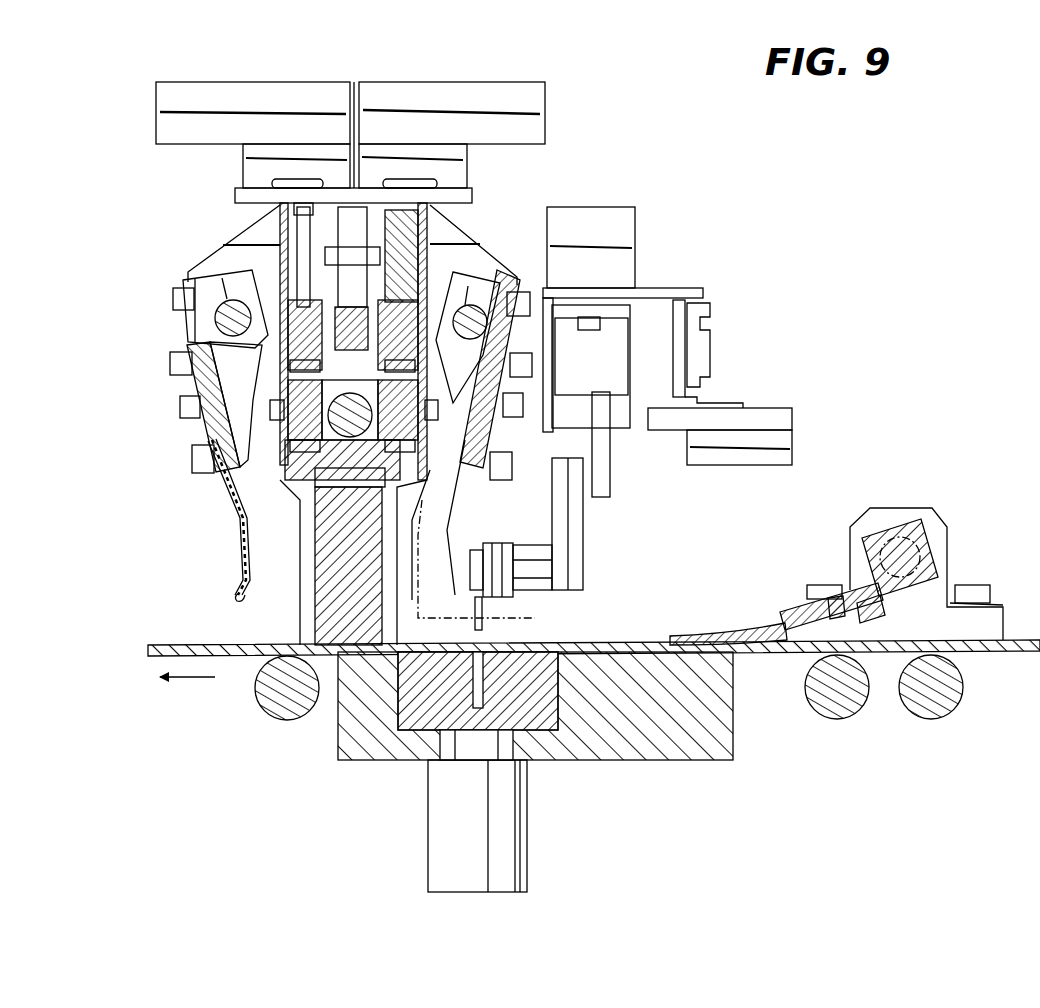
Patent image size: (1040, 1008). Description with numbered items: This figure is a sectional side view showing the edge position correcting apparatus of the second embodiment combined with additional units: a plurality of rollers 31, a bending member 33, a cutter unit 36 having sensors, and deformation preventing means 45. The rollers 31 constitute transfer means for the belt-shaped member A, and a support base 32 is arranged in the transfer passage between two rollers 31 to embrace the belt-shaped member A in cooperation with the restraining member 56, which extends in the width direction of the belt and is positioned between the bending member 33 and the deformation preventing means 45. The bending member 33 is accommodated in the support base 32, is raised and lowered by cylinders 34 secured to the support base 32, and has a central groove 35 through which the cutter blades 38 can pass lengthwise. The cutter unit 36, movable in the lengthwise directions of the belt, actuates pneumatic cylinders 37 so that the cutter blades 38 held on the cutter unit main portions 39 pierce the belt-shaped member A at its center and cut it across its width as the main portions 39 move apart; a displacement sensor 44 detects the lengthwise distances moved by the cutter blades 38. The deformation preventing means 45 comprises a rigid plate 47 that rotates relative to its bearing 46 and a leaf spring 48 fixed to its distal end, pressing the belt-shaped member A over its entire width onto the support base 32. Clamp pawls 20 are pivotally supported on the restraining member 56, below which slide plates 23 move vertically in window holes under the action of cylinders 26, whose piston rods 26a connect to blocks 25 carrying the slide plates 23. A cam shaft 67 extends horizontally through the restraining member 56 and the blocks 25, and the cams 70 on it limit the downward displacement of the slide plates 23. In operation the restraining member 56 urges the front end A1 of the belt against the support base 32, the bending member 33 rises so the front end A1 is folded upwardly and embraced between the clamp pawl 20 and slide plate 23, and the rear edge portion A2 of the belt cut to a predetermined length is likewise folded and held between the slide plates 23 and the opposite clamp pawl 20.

The cylinder 26 is at (405, 226).
The piston rod 26a is at (282, 282).
The block 25 is at (282, 340).
The cam shaft 67 is at (270, 382).
The clamp pawl 20 is at (212, 420).
The cam 70 is at (283, 438).
The slide plate 23 is at (292, 498).
The restraining member 56 is at (302, 598).
The pneumatic cylinder 37 is at (636, 222).
The cutter unit 36 is at (677, 277).
The cutter unit main portion 39 is at (642, 360).
The displacement sensor 44 is at (790, 440).
The cutter blade 38 is at (480, 637).
The belt-shaped member A is at (637, 630).
The front end of belt-shaped member A1 is at (512, 643).
The rear edge portion of belt-shaped member A2 is at (439, 599).
The leaf spring 48 is at (695, 633).
The deformation preventing means 45 is at (825, 568).
The bearing 46 is at (902, 508).
The rigid plate 47 is at (870, 613).
The roller 31 is at (263, 715).
The support base 32 is at (642, 727).
The bending member 33 is at (518, 703).
The cylinder 34 is at (432, 837).
The groove 35 is at (436, 692).